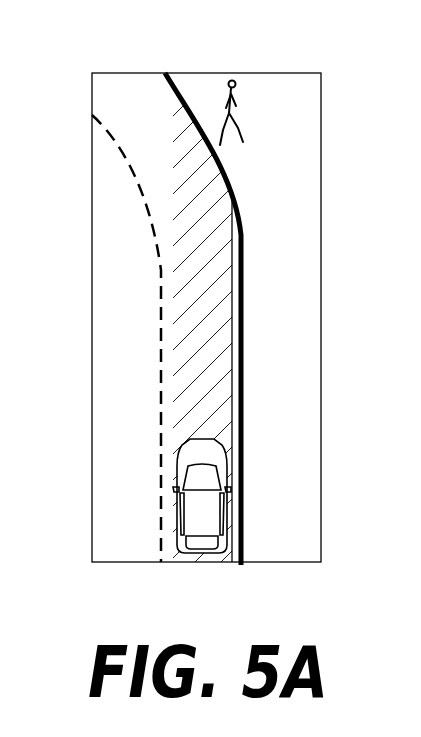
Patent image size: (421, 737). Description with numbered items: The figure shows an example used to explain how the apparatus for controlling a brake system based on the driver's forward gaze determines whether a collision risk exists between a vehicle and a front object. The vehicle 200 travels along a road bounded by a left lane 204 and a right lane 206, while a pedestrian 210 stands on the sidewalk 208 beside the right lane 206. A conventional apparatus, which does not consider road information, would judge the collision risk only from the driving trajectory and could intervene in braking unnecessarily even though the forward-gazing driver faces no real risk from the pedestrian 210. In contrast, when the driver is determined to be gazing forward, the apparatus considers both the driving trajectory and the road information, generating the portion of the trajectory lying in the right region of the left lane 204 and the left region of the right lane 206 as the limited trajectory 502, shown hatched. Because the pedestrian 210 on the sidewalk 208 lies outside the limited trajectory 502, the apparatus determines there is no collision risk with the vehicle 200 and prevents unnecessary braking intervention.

The vehicle 200 is at (222, 535).
The left lane 204 is at (160, 326).
The right lane 206 is at (243, 284).
The sidewalk 208 is at (313, 177).
The pedestrian 210 is at (232, 79).
The limited trajectory 502 is at (230, 385).